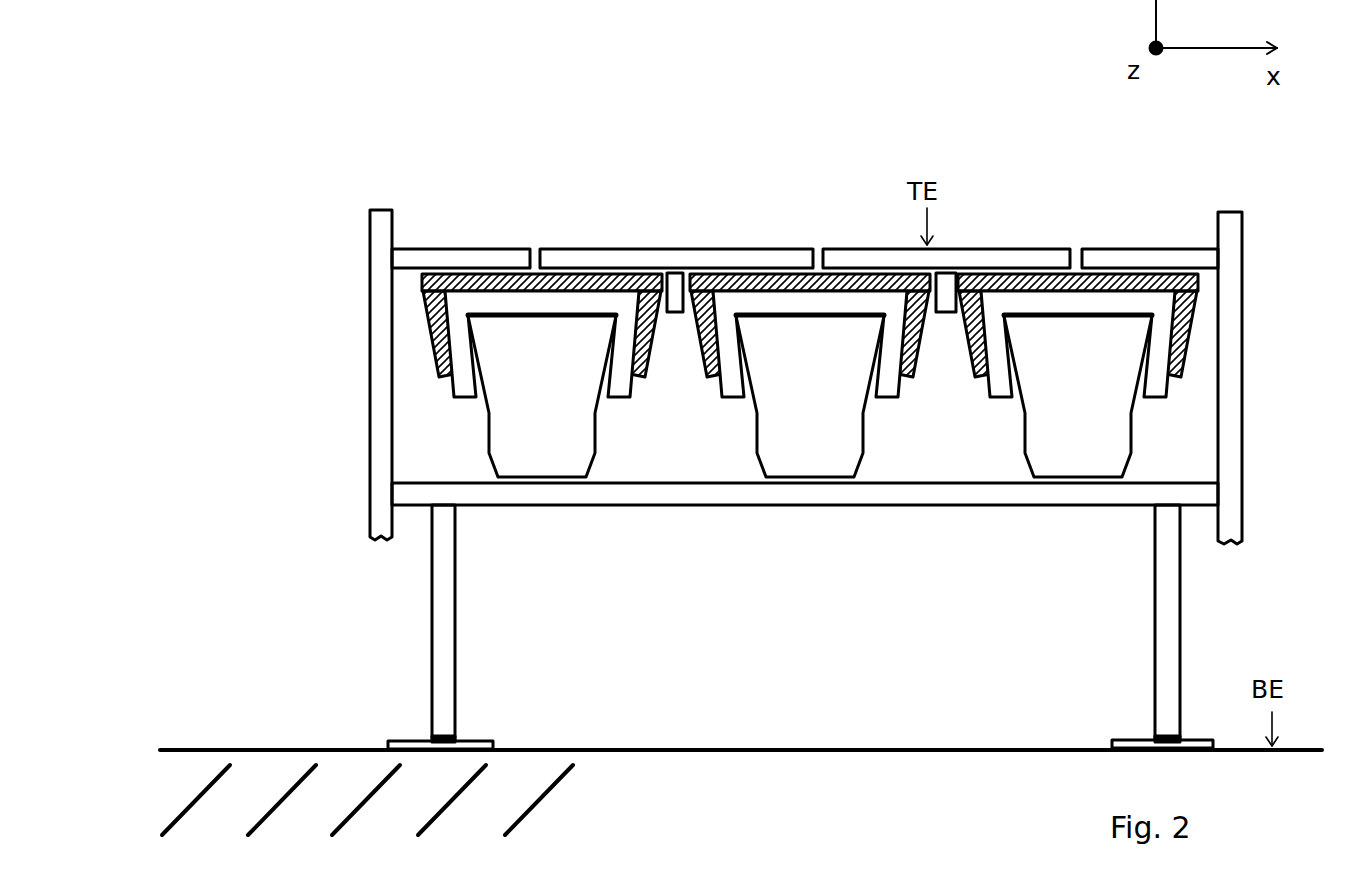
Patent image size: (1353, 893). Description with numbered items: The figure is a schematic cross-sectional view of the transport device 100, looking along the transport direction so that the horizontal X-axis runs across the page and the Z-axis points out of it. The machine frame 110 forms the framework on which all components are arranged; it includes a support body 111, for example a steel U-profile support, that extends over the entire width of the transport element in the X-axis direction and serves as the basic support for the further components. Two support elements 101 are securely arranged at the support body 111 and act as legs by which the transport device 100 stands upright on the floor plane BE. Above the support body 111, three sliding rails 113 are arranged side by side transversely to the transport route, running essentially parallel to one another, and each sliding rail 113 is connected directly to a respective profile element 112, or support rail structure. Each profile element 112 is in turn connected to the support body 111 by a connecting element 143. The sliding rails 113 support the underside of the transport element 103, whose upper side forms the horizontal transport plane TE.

The transport device 100 is at (182, 125).
The machine frame 110 is at (343, 463).
The support element 101 is at (440, 600).
The support body 111 is at (728, 495).
The transport element 103 is at (640, 258).
The profile element 112 is at (598, 305).
The sliding rail 113 is at (445, 277).
The connecting element 143 is at (565, 428).